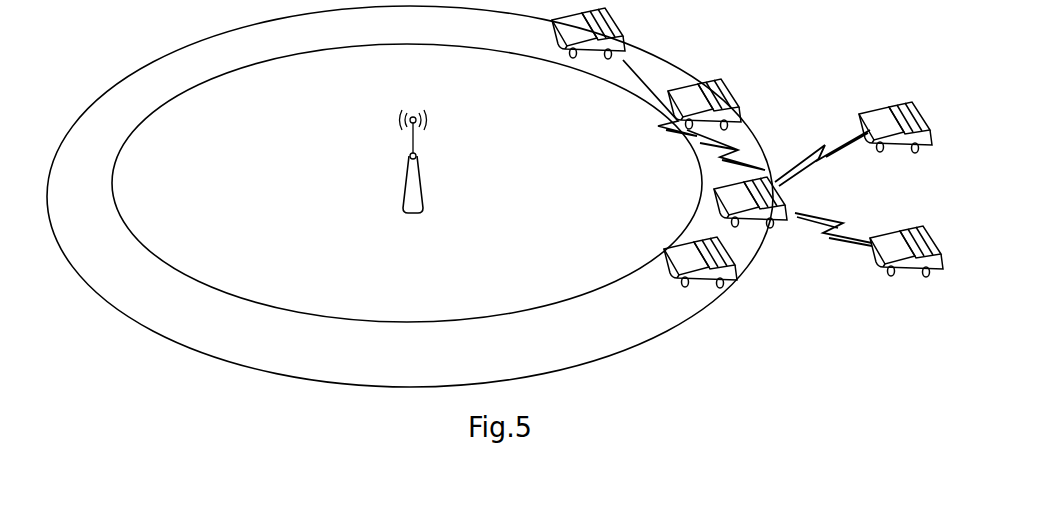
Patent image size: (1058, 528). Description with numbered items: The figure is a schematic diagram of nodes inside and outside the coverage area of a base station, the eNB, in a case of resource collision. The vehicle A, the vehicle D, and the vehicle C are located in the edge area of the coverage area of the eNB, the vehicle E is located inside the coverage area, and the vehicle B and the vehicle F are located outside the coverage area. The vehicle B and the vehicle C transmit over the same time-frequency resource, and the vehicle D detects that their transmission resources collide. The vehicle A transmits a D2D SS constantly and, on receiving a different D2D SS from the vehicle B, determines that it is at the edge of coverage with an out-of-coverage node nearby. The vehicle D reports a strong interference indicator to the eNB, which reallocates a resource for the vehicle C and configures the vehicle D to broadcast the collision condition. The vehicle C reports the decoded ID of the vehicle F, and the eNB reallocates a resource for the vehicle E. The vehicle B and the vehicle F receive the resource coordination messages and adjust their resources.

The element eNB is at (412, 179).
The vehicle A is at (710, 276).
The vehicle B is at (911, 266).
The vehicle C is at (745, 104).
The vehicle D is at (766, 214).
The vehicle E is at (628, 33).
The vehicle F is at (902, 144).